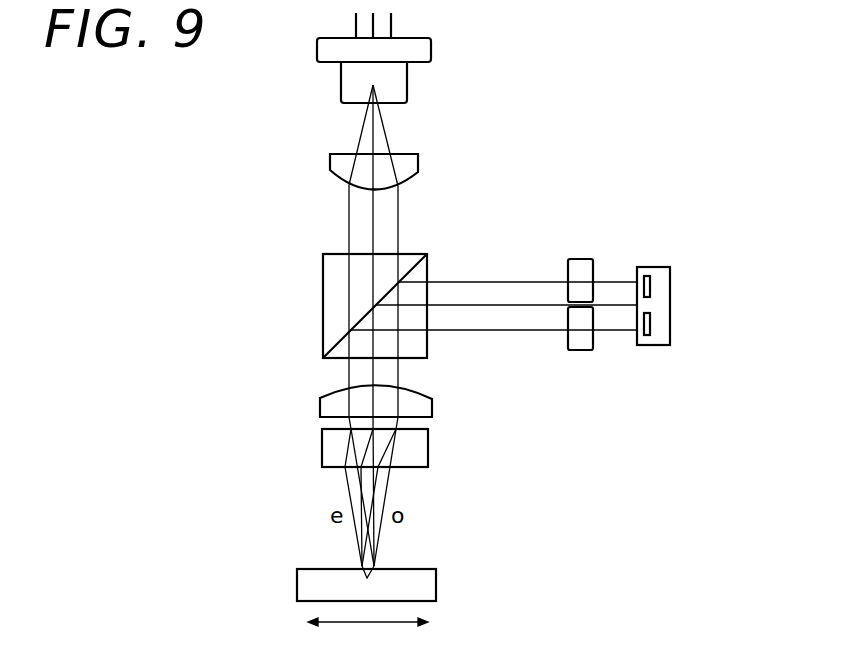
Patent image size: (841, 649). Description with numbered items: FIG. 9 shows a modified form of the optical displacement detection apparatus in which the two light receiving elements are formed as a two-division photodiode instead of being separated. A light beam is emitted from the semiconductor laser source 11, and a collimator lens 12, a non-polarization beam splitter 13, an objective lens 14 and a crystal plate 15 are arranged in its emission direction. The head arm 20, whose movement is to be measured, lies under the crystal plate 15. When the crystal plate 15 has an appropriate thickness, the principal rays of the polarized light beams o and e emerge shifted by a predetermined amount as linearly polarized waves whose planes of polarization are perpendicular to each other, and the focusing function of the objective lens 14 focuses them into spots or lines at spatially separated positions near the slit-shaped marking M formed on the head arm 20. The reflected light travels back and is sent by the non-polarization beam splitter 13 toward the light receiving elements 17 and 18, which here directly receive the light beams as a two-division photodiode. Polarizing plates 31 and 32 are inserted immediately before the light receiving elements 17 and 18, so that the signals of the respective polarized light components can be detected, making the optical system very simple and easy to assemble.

The semiconductor laser source 11 is at (398, 88).
The collimator lens 12 is at (338, 167).
The non-polarization beam splitter 13 is at (332, 285).
The objective lens 14 is at (323, 407).
The crystal plate 15 is at (332, 450).
The light receiving element 17 is at (653, 282).
The light receiving element 18 is at (653, 330).
The head arm 20 is at (310, 582).
The polarizing plate 31 is at (582, 267).
The polarizing plate 32 is at (582, 343).
The slit-shaped marking M is at (380, 574).